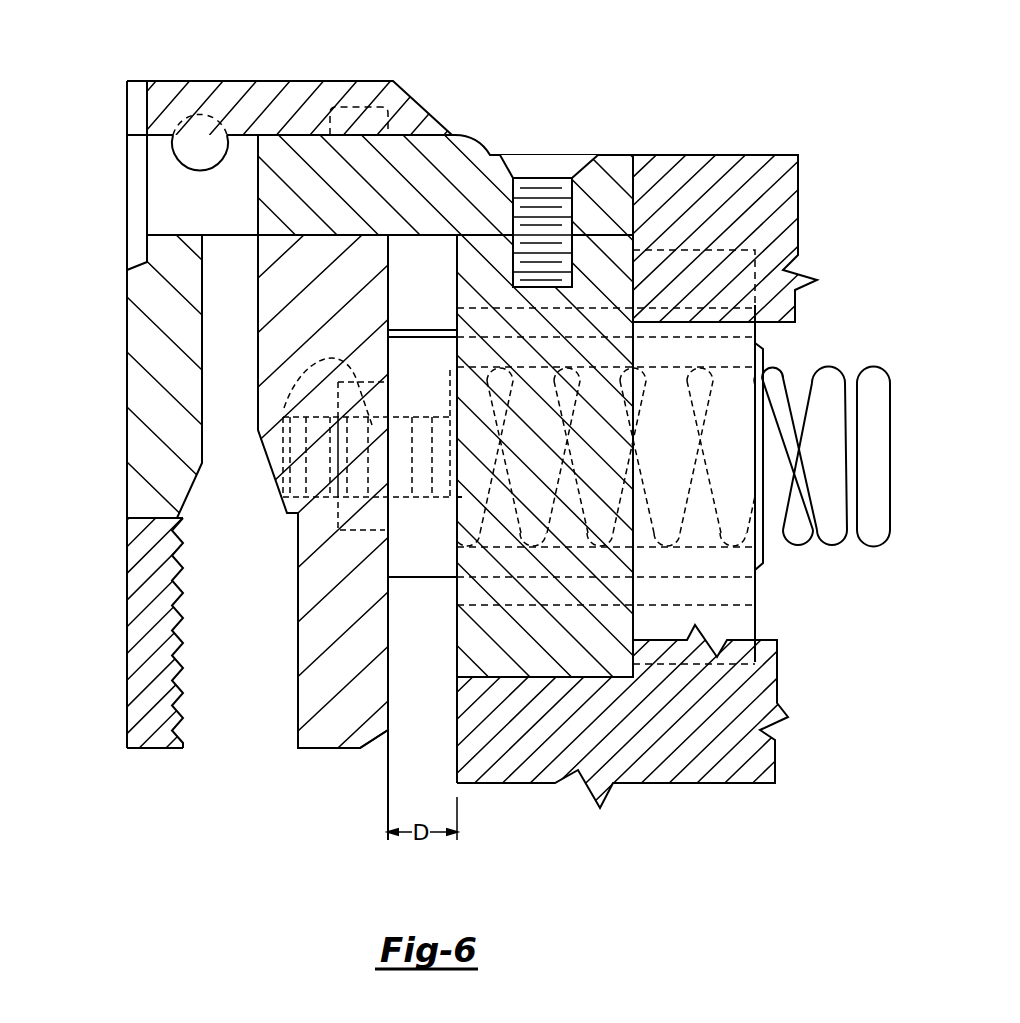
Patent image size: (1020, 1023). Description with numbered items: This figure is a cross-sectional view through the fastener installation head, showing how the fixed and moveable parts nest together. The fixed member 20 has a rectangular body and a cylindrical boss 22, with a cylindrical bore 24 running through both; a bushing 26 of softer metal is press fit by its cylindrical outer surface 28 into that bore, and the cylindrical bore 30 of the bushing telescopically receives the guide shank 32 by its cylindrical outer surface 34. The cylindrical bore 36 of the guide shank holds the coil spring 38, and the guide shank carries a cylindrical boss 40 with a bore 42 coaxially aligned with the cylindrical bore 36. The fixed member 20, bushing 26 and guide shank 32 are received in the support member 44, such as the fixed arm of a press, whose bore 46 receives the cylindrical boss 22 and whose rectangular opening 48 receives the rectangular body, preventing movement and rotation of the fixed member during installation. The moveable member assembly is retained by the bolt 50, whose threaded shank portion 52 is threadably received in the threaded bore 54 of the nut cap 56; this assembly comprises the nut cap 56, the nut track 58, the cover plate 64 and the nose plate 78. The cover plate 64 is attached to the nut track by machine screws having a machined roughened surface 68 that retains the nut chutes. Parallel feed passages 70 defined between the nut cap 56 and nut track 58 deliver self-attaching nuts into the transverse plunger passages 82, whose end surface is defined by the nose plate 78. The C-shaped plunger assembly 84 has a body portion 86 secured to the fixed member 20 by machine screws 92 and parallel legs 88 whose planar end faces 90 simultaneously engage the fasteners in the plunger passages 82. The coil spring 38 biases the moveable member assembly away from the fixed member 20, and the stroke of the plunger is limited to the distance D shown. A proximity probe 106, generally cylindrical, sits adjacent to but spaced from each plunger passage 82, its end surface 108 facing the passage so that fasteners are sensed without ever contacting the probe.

The fixed member 20 is at (622, 268).
The cylindrical boss 22 is at (693, 660).
The cylindrical bore 24 is at (478, 308).
The bushing 26 is at (749, 592).
The cylindrical outer surface 28 is at (548, 606).
The cylindrical bore 30 is at (457, 613).
The guide shank 32 is at (398, 325).
The cylindrical outer surface 34 is at (428, 348).
The cylindrical bore 36 is at (598, 380).
The coil spring 38 is at (832, 528).
The cylindrical boss 40 is at (257, 430).
The bore 42 is at (335, 500).
The support member 44 is at (707, 780).
The bore 46 is at (658, 663).
The rectangular opening 48 is at (492, 652).
The bolt 50 is at (462, 497).
The threaded shank portion 52 is at (402, 430).
The threaded bore 54 is at (290, 455).
The nut cap 56 is at (327, 727).
The nut track 58 is at (150, 418).
The cover plate 64 is at (135, 636).
The machined roughened surface 68 is at (178, 653).
The feed passages 70 is at (222, 368).
The nose plate 78 is at (241, 92).
The plunger passages 82 is at (168, 198).
The plunger assembly 84 is at (488, 148).
The body portion 86 is at (633, 202).
The legs 88 is at (315, 153).
The planar end faces 90 is at (258, 218).
The machine screws 92 is at (545, 172).
The proximity probe 106 is at (160, 157).
The end surface 108 is at (200, 147).